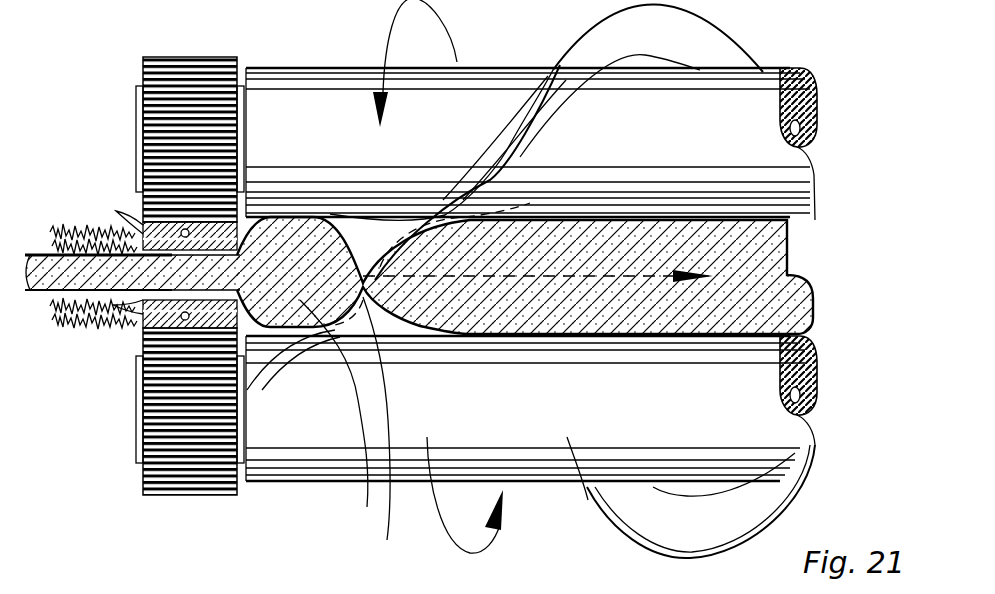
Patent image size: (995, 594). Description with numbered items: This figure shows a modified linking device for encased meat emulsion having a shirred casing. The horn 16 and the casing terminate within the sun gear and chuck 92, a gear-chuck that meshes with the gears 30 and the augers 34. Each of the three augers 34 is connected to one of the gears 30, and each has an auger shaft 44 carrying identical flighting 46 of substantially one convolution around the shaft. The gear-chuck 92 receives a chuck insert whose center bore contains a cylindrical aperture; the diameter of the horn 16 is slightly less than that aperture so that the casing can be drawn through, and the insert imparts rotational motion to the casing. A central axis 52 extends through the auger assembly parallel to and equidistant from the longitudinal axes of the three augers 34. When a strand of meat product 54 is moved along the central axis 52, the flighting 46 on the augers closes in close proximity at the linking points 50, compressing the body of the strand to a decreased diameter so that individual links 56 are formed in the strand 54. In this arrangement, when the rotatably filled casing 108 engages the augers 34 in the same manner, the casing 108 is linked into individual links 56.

The horn 16 is at (47, 291).
The gears 30 is at (155, 137).
The augers 34 is at (272, 62).
The auger shaft 44 is at (314, 100).
The flighting 46 is at (563, 55).
The linking point 50 is at (389, 505).
The central axis 52 is at (787, 233).
The strand of meat product 54 is at (367, 495).
The individual links 56 is at (773, 266).
The sun gear and chuck 92 is at (120, 212).
The rotatably filled casing 108 is at (92, 228).